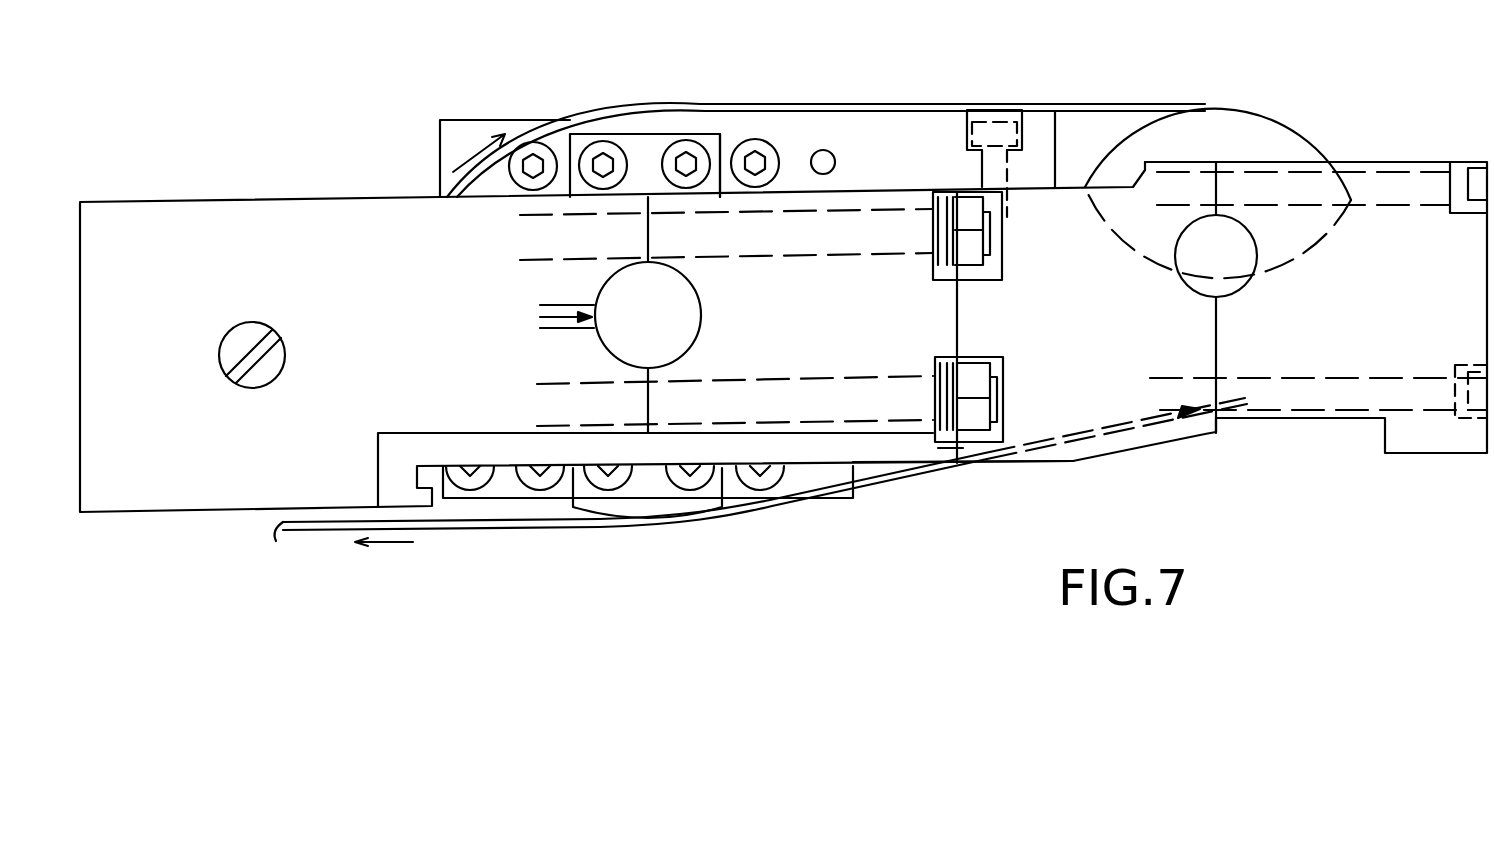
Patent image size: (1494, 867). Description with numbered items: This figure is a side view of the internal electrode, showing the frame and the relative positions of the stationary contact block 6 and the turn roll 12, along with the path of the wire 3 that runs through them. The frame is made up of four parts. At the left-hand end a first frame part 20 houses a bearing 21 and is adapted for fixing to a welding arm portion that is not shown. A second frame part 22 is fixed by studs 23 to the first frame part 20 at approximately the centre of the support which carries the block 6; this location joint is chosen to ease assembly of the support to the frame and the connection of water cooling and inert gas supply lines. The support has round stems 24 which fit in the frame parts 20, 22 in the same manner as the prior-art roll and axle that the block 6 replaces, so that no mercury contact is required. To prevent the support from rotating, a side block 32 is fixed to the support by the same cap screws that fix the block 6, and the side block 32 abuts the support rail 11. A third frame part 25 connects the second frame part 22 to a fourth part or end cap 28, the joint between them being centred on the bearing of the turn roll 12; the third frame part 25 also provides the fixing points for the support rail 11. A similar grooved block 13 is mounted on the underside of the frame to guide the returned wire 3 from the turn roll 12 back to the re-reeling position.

The belt 3 is at (527, 130).
The stationary contact block 6 is at (661, 125).
The support rail 11 is at (857, 130).
The turn roll 12 is at (1203, 133).
The grooved block 13 is at (676, 505).
The first frame part 20 is at (193, 225).
The bearing 21 is at (250, 334).
The second frame part 22 is at (903, 445).
The studs 23 is at (970, 260).
The round stems 24 is at (620, 315).
The third frame part 25 is at (1148, 437).
The end cap 28 is at (1403, 253).
The side block 32 is at (722, 128).